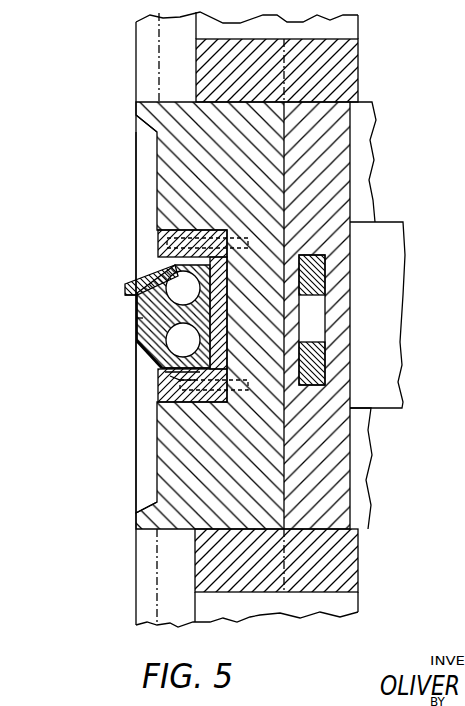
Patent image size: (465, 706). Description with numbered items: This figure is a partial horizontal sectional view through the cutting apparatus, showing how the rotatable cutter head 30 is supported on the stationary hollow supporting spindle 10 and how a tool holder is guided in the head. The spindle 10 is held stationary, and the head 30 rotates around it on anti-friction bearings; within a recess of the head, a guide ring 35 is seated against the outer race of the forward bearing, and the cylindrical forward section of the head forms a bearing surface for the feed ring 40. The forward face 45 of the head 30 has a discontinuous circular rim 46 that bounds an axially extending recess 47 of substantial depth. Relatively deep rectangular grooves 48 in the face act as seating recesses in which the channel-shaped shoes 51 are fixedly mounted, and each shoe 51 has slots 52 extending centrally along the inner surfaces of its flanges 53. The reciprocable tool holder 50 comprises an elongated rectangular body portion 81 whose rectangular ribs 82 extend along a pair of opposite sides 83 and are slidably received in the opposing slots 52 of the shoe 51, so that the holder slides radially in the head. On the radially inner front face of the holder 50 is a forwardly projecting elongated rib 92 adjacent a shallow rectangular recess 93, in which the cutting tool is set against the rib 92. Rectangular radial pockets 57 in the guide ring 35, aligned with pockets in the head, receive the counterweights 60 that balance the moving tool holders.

The stationary hollow supporting spindle 10 is at (383, 332).
The rotatable cutter head 30 is at (178, 98).
The guide ring 35 is at (335, 156).
The feed ring 40 is at (343, 32).
The forward face 45 is at (155, 478).
The discontinuous circular rim 46 is at (148, 114).
The axially extending recess 47 is at (147, 158).
The grooves 48 is at (158, 243).
The tool holder 50 is at (126, 288).
The shoe 51 is at (155, 258).
The slots 52 is at (157, 370).
The flanges 53 is at (158, 387).
The rectangular radial pockets 57 is at (318, 282).
The counterweights 60 is at (317, 317).
The elongated rectangular body portion 81 is at (160, 327).
The rectangular ribs 82 is at (132, 295).
The opposite sides 83 is at (153, 365).
The forwardly projecting elongated rib 92 is at (123, 293).
The shallow rectangular recess 93 is at (137, 317).